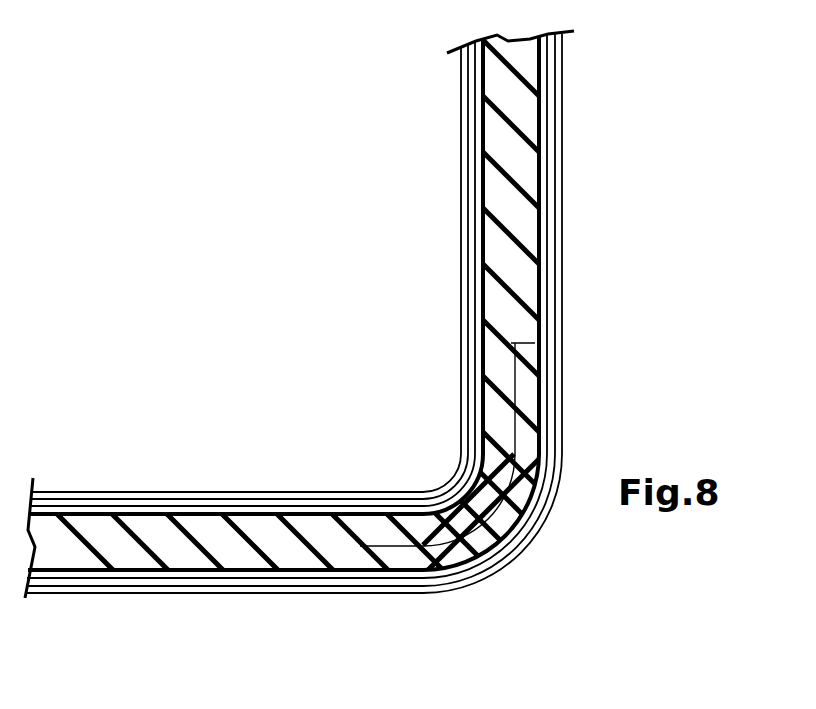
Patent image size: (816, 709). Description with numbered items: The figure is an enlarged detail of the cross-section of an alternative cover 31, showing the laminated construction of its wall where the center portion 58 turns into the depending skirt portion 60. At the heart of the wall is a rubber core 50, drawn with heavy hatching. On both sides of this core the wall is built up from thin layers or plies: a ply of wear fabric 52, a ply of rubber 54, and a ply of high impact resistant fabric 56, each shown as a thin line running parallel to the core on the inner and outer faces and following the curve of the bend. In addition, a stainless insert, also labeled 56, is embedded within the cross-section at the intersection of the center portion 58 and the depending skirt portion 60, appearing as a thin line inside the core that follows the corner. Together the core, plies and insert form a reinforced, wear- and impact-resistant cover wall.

The cover 31 is at (700, 180).
The rubber core 50 is at (508, 250).
The wear fabric 52 is at (462, 100).
The rubber 54 is at (469, 127).
The high impact resistant fabric 56 is at (475, 157).
The center portion 58 is at (585, 285).
The depending skirt portion 60 is at (280, 615).